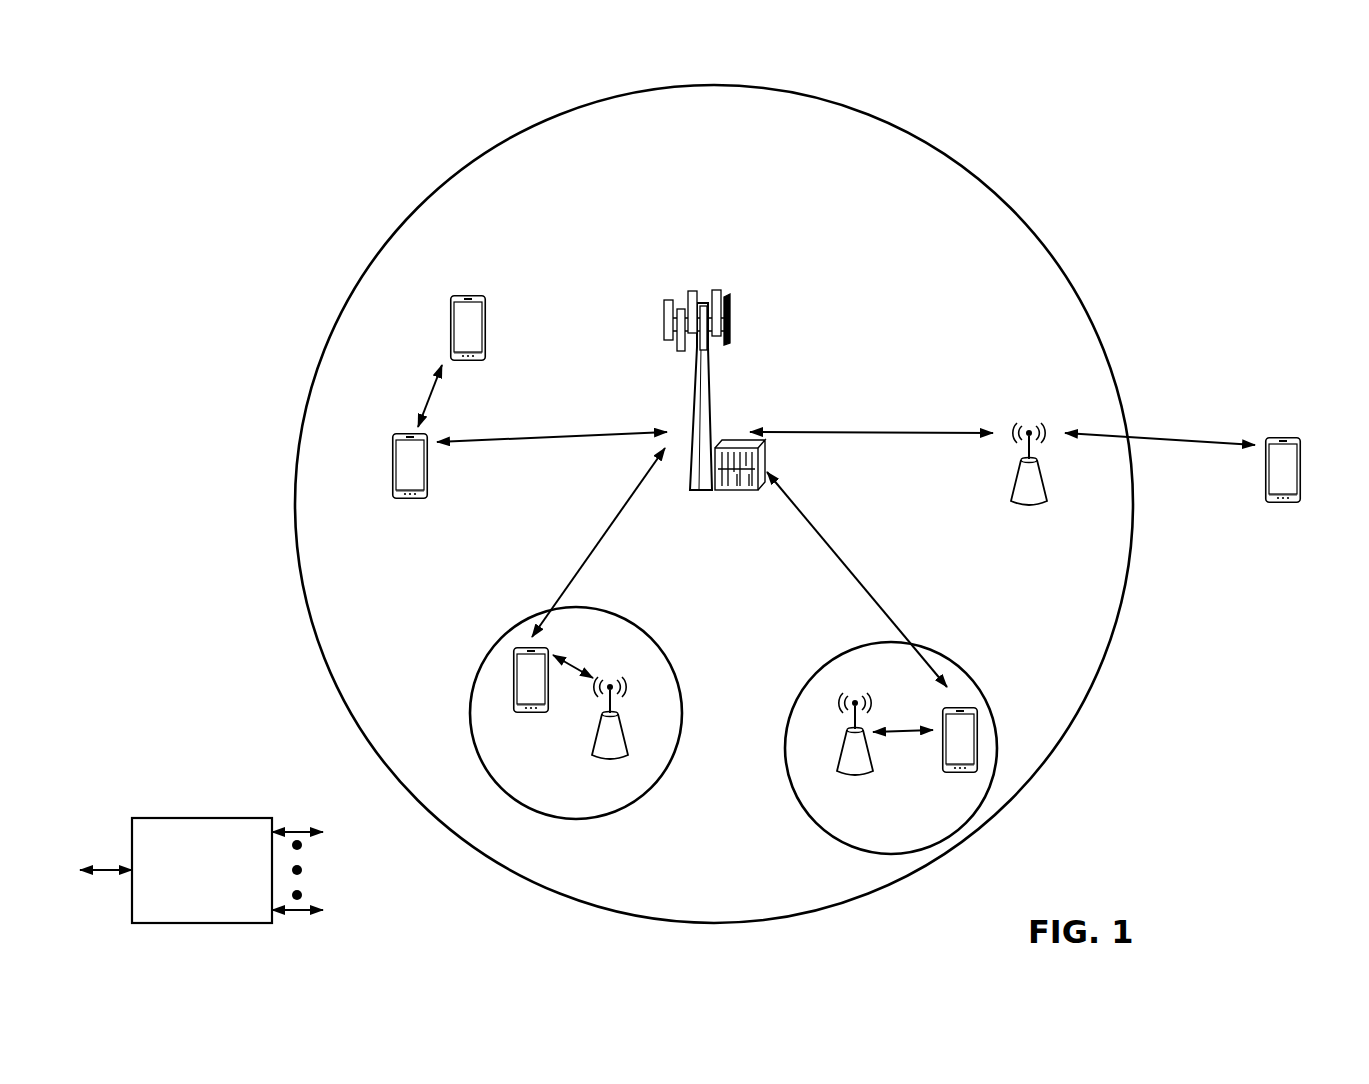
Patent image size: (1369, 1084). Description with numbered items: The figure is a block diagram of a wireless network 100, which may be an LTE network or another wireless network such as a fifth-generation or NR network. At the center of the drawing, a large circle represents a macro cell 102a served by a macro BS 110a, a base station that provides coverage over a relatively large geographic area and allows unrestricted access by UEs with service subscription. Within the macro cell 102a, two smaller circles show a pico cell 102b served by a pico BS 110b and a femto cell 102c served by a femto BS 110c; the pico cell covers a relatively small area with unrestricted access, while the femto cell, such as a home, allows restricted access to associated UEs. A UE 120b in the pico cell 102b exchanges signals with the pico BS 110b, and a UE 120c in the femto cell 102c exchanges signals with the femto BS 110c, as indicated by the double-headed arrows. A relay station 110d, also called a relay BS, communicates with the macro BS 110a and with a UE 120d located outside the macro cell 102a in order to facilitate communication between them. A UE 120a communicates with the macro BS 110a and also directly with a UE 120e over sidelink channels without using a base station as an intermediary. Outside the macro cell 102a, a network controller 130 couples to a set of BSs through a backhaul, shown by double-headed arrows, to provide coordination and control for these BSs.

The wireless network 100 is at (182, 80).
The macro cell 102a is at (996, 192).
The pico cell 102b is at (667, 652).
The femto cell 102c is at (827, 662).
The macro BS 110a is at (727, 283).
The pico BS 110b is at (631, 748).
The femto BS 110c is at (836, 761).
The relay station 110d is at (1030, 422).
The UE 120a is at (392, 462).
The UE 120b is at (520, 714).
The UE 120c is at (940, 776).
The UE 120d is at (1293, 437).
The UE 120e is at (452, 316).
The network controller 130 is at (200, 817).